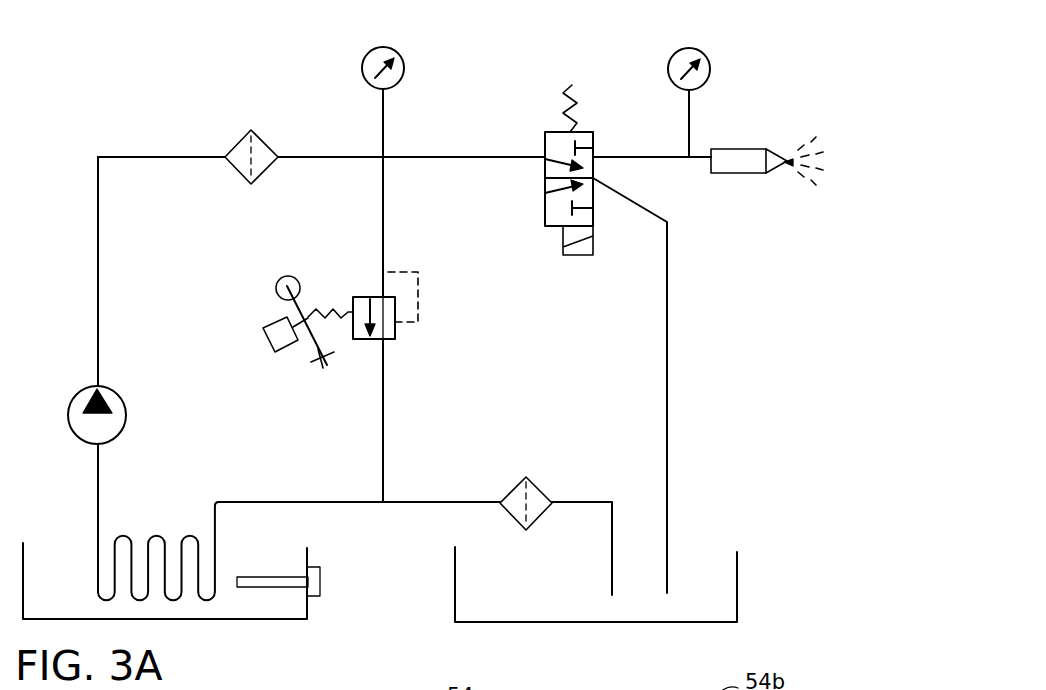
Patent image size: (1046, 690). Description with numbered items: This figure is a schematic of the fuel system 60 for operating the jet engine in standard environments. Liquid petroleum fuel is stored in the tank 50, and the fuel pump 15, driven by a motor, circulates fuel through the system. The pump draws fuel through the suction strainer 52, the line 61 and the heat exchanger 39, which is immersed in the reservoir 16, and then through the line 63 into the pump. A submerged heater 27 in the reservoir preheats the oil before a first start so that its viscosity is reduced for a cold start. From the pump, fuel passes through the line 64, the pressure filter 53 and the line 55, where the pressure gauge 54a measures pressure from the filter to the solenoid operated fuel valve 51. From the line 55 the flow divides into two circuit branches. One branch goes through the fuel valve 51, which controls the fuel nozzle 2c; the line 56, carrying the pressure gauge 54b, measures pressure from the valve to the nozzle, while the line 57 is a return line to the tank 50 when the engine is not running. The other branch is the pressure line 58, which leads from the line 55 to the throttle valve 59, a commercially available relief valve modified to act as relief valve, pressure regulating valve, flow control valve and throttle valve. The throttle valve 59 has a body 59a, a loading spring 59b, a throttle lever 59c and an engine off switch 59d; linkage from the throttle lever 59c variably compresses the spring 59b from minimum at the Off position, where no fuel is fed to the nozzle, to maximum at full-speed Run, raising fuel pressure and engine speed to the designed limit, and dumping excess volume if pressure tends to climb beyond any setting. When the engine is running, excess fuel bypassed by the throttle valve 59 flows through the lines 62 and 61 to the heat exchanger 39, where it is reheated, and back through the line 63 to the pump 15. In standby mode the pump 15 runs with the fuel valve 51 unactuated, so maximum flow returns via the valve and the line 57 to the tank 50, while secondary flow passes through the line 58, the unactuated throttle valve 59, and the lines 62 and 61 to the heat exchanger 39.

The fuel nozzle 2c is at (722, 148).
The fuel pump 15 is at (70, 410).
The reservoir 16 is at (232, 621).
The submerged heater 27 is at (320, 591).
The heat exchanger 39 is at (135, 598).
The tank 50 is at (543, 623).
The solenoid operated fuel valve 51 is at (593, 142).
The suction strainer 52 is at (528, 477).
The pressure filter 53 is at (253, 133).
The pressure gauge 54a is at (402, 50).
The pressure gauge 54b is at (703, 52).
The line 55 is at (305, 157).
The line 56 is at (653, 158).
The line 57 is at (668, 340).
The line 58 is at (383, 237).
The throttle valve 59 is at (395, 333).
The body 59a is at (387, 340).
The loading spring 59b is at (343, 313).
The throttle lever 59c is at (276, 290).
The engine off switch 59d is at (263, 343).
The fuel system 60 is at (270, 413).
The line 61 is at (310, 502).
The line 62 is at (385, 445).
The line 63 is at (97, 470).
The line 64 is at (98, 217).